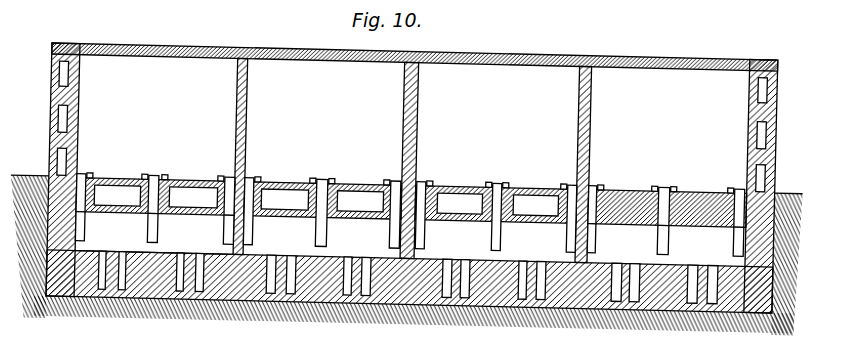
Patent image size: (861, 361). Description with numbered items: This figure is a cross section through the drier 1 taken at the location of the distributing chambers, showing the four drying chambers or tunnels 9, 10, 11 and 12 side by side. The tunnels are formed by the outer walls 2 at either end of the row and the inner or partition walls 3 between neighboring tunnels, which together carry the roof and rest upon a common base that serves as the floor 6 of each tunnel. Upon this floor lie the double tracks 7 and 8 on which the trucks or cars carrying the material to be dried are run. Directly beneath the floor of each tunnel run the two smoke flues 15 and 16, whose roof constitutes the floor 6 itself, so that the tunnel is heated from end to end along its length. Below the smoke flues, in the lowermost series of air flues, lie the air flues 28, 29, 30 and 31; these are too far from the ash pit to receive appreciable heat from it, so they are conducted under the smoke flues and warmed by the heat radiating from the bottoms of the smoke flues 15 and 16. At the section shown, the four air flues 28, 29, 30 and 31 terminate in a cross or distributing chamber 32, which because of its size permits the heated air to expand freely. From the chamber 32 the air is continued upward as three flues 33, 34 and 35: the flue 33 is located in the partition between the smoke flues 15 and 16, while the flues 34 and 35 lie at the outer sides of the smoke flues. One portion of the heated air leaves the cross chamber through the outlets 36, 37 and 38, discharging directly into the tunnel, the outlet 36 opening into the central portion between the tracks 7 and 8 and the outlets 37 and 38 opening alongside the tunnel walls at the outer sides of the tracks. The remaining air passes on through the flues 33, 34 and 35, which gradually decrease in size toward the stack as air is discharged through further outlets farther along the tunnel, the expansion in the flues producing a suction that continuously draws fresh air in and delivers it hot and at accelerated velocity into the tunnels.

The drier 1 is at (370, 51).
The outer walls 2 is at (53, 116).
The inner or partition walls 3 is at (249, 111).
The floor 6 is at (457, 177).
The track 7 is at (315, 174).
The track 8 is at (391, 176).
The drying chamber or tunnel 9 is at (157, 62).
The drying chamber or tunnel 10 is at (302, 59).
The drying chamber or tunnel 11 is at (483, 58).
The drying chamber or tunnel 12 is at (653, 64).
The smoke flue 15 is at (110, 190).
The smoke flue 16 is at (189, 193).
The air flue 28 is at (110, 289).
The air flue 29 is at (130, 288).
The air flue 30 is at (187, 287).
The air flue 31 is at (209, 286).
The cross or distributing chamber 32 is at (102, 244).
The flue 33 is at (155, 229).
The flue 34 is at (81, 226).
The flue 35 is at (231, 229).
The outlet 36 is at (156, 176).
The outlet 37 is at (84, 178).
The outlet 38 is at (233, 176).